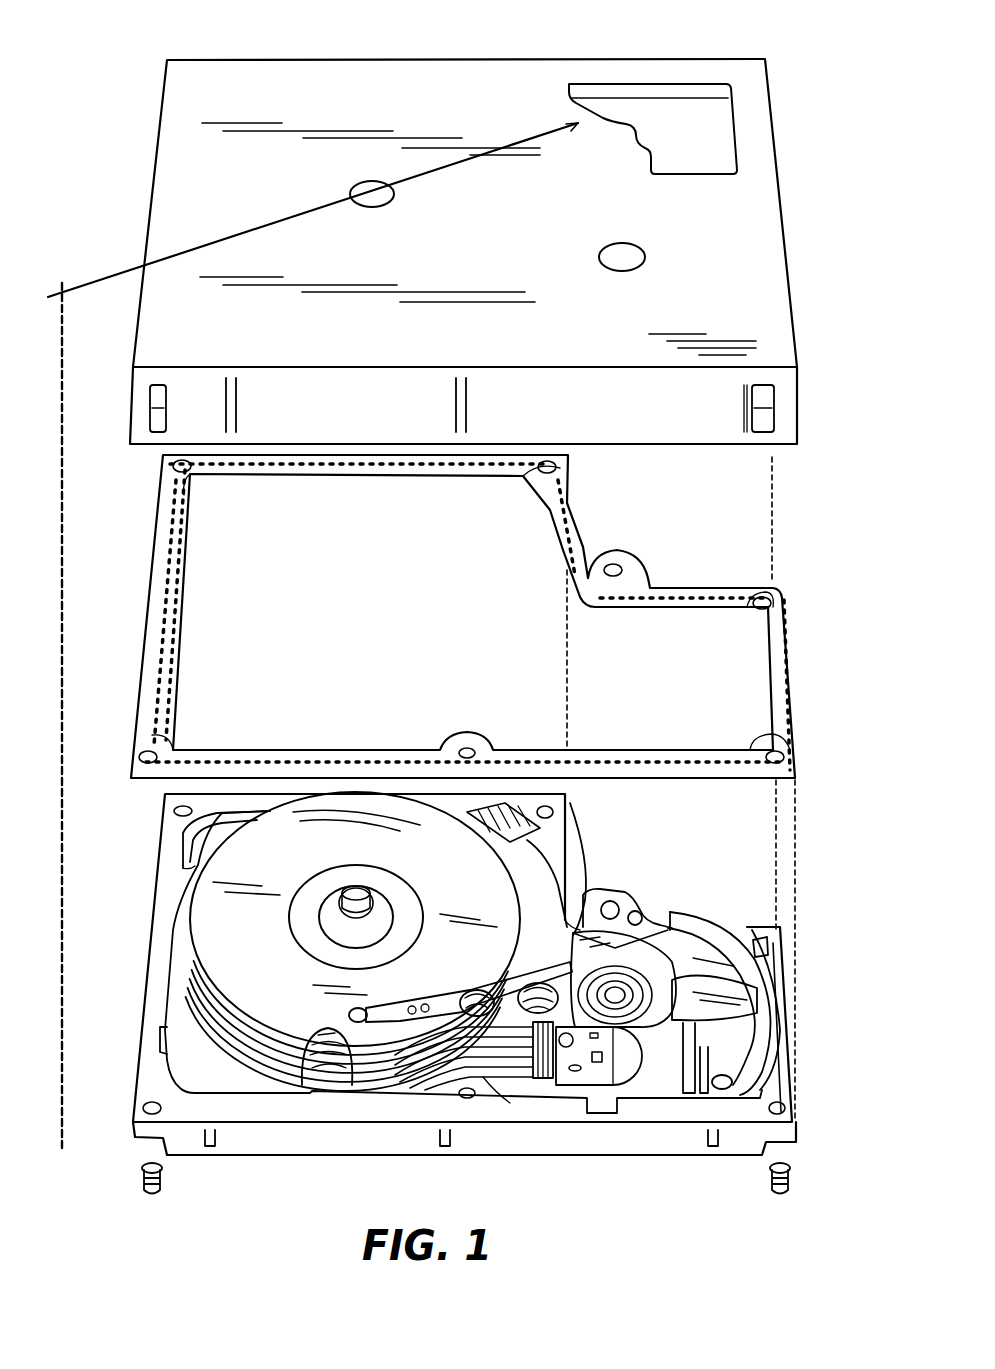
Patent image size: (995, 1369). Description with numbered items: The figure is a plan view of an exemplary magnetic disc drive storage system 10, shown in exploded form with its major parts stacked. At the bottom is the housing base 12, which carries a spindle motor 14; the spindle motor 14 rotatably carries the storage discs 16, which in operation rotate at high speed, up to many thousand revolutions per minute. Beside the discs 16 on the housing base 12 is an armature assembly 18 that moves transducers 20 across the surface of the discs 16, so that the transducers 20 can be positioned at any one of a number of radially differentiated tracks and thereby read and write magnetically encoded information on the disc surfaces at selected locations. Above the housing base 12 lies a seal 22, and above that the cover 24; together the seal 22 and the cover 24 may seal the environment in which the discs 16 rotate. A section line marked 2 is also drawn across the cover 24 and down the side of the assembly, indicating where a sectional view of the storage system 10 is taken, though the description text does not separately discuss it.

The storage system 10 is at (769, 56).
The section line 2- 2 is at (556, 132).
The cover 24 is at (783, 237).
The seal 22 is at (791, 737).
The housing base 12 is at (795, 1118).
The spindle motor 14 is at (320, 927).
The storage discs 16 is at (326, 1034).
The armature assembly 18 is at (512, 1090).
The transducers 20 is at (370, 1005).